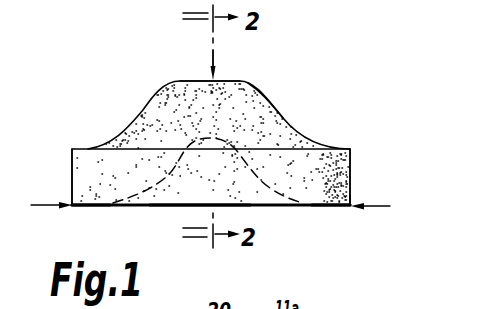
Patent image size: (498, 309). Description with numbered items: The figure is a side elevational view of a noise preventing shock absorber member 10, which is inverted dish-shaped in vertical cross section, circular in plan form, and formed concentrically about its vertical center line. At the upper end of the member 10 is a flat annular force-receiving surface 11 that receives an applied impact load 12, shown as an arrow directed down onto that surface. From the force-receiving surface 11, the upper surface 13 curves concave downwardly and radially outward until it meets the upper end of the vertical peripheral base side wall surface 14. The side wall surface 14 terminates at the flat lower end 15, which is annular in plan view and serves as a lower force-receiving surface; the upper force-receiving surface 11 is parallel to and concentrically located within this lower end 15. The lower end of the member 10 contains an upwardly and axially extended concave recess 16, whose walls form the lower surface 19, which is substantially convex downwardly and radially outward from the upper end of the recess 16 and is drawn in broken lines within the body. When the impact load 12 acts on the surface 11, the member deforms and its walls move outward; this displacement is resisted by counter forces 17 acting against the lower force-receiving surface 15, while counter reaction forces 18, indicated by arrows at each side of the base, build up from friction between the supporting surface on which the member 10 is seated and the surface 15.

The noise preventing shock absorber member 10 is at (127, 122).
The flat annular force-receiving surface 11 is at (178, 80).
The applied impact load 12 is at (215, 55).
The upper surface 13 is at (283, 117).
The vertical peripheral base side wall surface 14 is at (351, 172).
The flat lower end 15 is at (338, 207).
The concave recess 16 is at (178, 203).
The counter forces 17 is at (100, 219).
The counter reaction forces 18 is at (45, 203).
The lower surface 19 is at (254, 179).